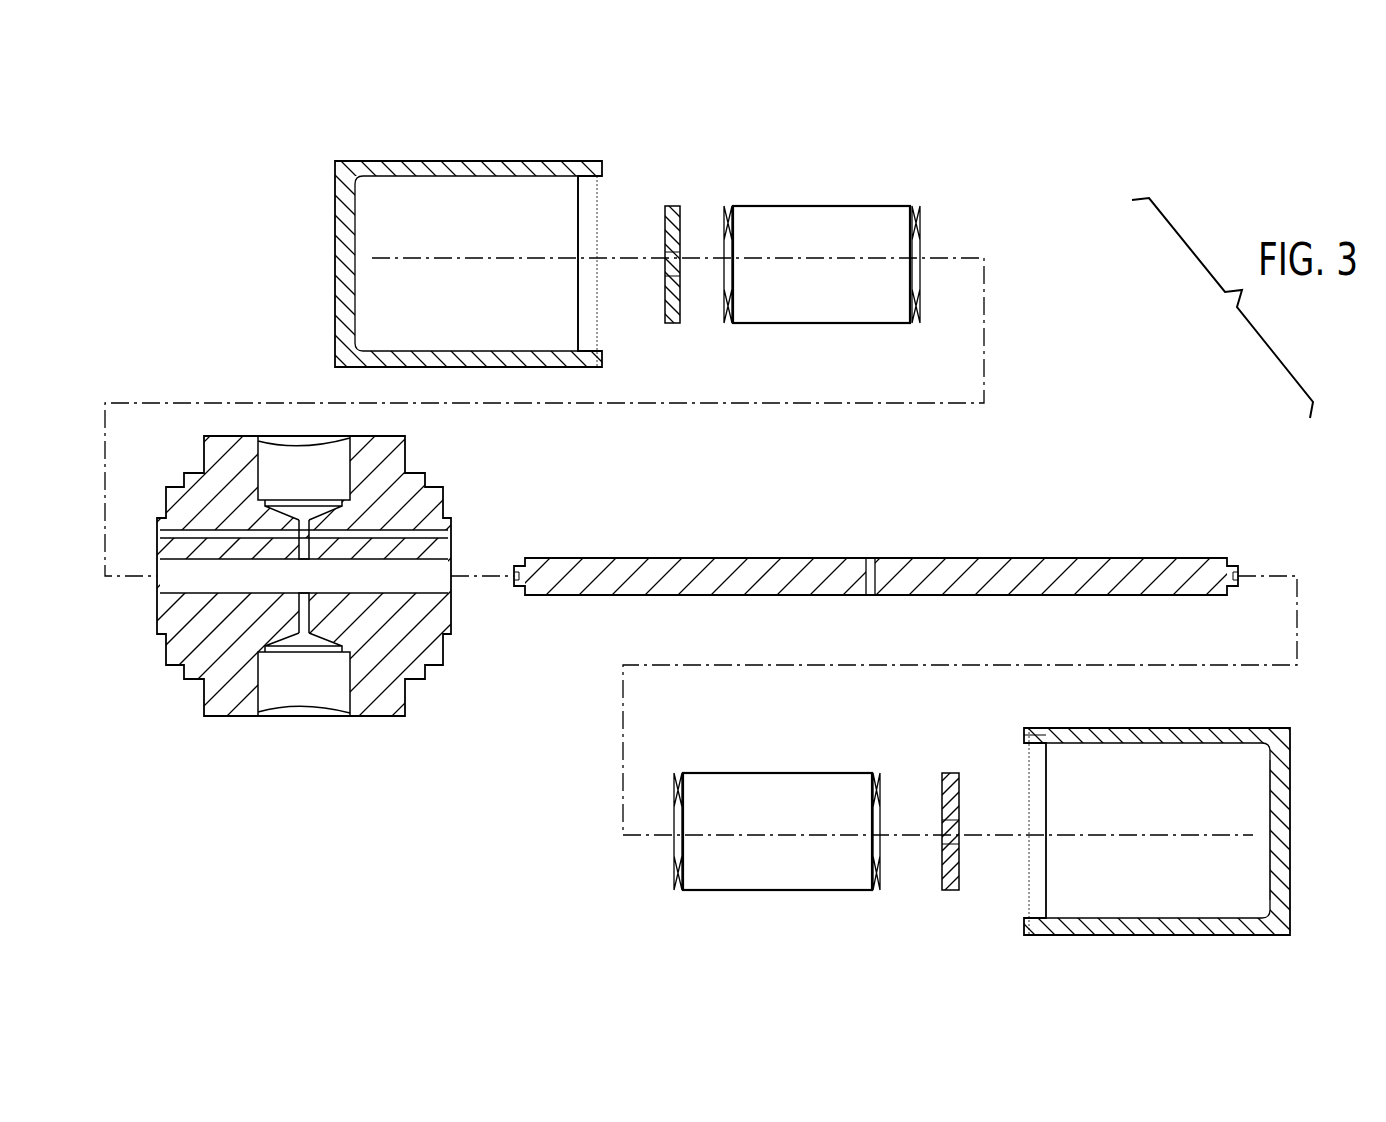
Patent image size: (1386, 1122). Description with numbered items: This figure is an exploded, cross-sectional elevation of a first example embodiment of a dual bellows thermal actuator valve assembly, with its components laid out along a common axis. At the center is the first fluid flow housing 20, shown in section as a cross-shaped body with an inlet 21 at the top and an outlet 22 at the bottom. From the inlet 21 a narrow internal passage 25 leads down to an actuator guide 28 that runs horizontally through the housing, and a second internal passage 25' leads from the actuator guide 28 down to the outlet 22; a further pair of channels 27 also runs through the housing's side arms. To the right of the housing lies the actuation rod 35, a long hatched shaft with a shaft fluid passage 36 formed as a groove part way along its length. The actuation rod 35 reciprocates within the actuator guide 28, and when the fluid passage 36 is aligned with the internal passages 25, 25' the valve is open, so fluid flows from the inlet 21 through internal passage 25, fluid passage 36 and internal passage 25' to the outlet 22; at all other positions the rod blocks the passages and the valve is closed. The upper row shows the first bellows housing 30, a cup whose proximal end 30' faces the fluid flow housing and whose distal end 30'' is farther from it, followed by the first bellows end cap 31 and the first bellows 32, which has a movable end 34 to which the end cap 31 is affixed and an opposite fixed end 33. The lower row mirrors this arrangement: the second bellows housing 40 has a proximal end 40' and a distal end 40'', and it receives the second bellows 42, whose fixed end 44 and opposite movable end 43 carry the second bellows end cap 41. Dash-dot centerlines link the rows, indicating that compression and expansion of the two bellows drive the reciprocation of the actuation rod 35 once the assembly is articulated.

The first fluid flow housing 20 is at (388, 584).
The inlet 21 is at (293, 450).
The outlet 22 is at (307, 692).
The internal passage 25 is at (396, 540).
The internal passage 25' is at (266, 676).
The lubrication channel 27 is at (207, 533).
The actuator guide 28 is at (440, 583).
The first bellows housing 30 is at (474, 264).
The proximal end 30' is at (619, 148).
The distal end 30'' is at (302, 165).
The first bellows end cap 31 is at (669, 222).
The first bellows 32 is at (821, 224).
The fixed end 33 is at (918, 232).
The movable end 34 is at (728, 232).
The actuation rod 35 is at (703, 570).
The shaft fluid passage 36 is at (873, 568).
The second bellows housing 40 is at (1095, 812).
The proximal end 40' is at (1043, 708).
The distal end 40'' is at (1313, 830).
The second bellows end cap 41 is at (953, 875).
The second bellows 42 is at (780, 868).
The movable end 43 is at (877, 865).
The fixed end 44 is at (676, 865).